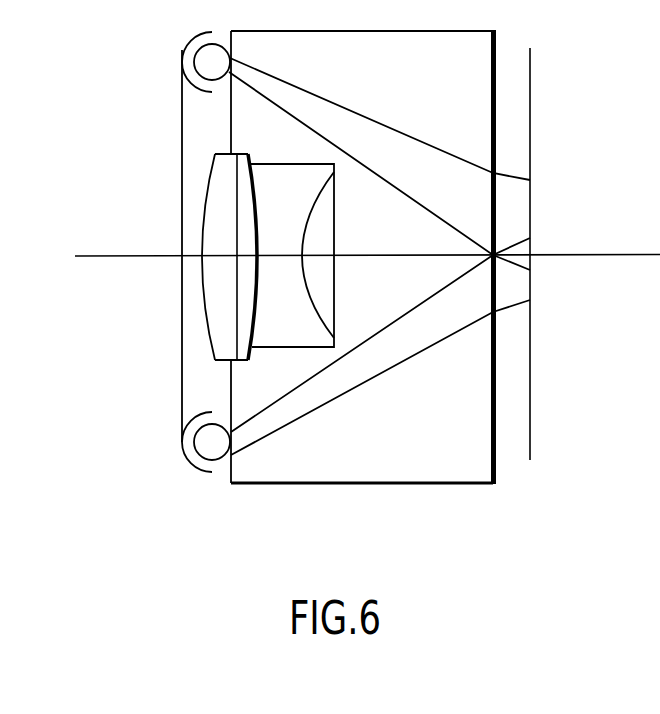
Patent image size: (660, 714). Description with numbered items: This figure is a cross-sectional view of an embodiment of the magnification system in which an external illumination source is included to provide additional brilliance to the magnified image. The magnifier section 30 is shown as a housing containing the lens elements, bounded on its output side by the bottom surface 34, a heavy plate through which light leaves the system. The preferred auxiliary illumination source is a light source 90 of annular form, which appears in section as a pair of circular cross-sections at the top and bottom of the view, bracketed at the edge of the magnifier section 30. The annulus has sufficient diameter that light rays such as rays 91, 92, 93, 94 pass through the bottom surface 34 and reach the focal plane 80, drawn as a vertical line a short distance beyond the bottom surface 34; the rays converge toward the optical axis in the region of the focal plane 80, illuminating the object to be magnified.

The magnifier section 30 is at (370, 453).
The bottom surface 34 is at (491, 386).
The focal plane 80 is at (532, 275).
The light source 90 is at (204, 271).
The light ray 91 is at (380, 377).
The light ray 92 is at (380, 335).
The light ray 93 is at (379, 171).
The light ray 94 is at (380, 119).